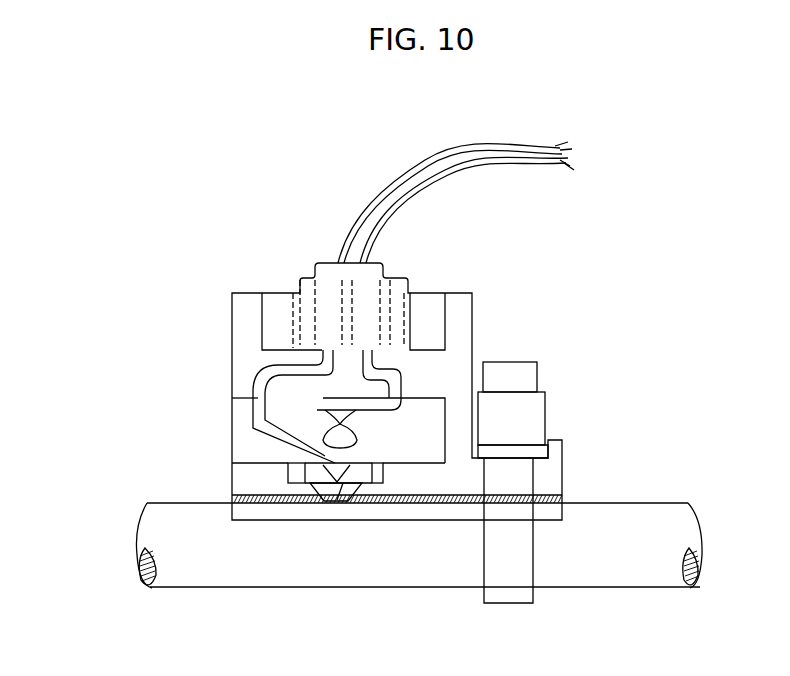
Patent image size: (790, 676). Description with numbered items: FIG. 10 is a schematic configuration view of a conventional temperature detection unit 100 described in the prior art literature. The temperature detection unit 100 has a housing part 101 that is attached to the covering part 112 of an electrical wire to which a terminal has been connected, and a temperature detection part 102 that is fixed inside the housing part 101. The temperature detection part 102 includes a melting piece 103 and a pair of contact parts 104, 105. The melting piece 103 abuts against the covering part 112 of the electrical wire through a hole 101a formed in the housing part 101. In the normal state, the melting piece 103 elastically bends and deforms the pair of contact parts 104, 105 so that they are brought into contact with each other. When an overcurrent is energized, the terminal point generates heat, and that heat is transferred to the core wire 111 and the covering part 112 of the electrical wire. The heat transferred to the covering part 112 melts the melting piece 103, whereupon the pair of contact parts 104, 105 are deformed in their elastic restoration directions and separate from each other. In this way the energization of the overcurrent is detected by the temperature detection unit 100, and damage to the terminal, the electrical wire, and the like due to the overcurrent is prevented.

The temperature detection unit 100 is at (249, 276).
The housing part 101 is at (243, 323).
The hole 101a is at (318, 500).
The temperature detection part 102 is at (382, 450).
The melting piece 103 is at (338, 492).
The contact part 104 is at (380, 420).
The contact part 105 is at (330, 421).
The core wire 111 is at (140, 553).
The covering part 112 is at (155, 520).